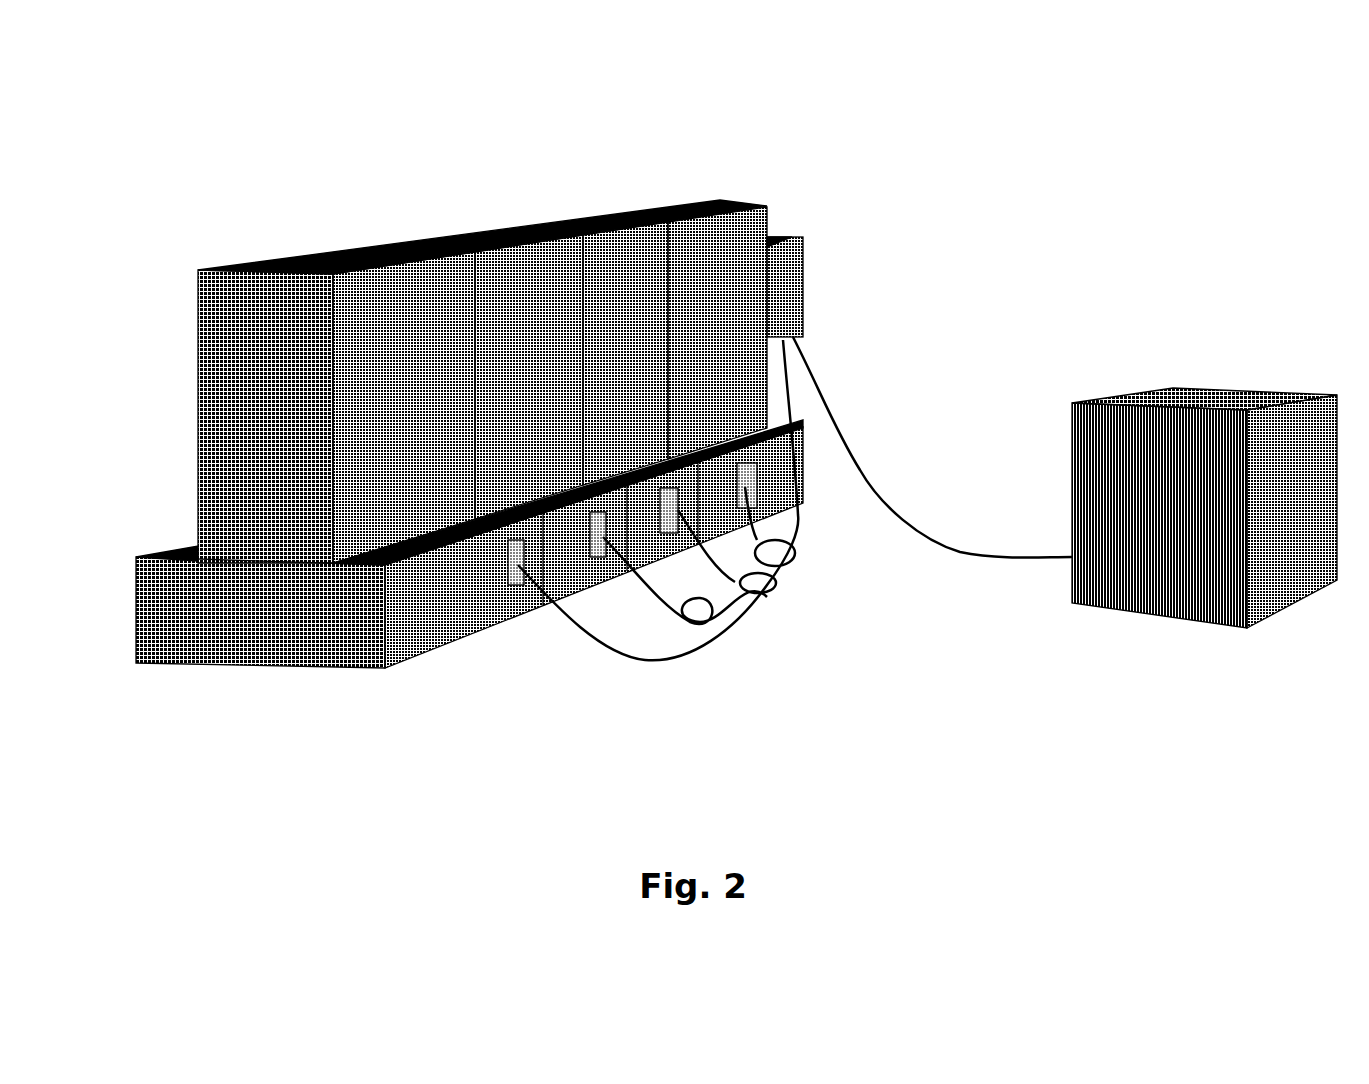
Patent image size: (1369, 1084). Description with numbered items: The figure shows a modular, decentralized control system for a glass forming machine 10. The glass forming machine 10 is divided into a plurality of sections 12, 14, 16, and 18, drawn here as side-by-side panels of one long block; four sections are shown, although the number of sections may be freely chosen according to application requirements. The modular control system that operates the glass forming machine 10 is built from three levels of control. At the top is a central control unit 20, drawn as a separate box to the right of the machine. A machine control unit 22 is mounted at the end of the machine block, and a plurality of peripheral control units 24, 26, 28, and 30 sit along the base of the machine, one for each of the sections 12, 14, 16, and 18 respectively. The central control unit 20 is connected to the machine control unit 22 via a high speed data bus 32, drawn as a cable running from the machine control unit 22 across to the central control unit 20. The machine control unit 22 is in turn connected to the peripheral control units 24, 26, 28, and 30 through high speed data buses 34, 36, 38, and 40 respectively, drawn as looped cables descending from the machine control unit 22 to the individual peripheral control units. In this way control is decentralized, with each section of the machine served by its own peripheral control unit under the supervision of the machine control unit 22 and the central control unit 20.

The glass forming machine 10 is at (474, 435).
The section 12 is at (377, 295).
The section 14 is at (503, 278).
The section 16 is at (610, 258).
The section 18 is at (713, 243).
The central control unit 20 is at (1220, 413).
The machine control unit 22 is at (795, 290).
The peripheral control unit 24 is at (522, 630).
The peripheral control unit 26 is at (599, 565).
The peripheral control unit 28 is at (673, 540).
The peripheral control unit 30 is at (780, 510).
The high speed data bus 32 is at (860, 465).
The high speed data bus 34 is at (793, 555).
The high speed data bus 36 is at (767, 597).
The high speed data bus 38 is at (713, 617).
The high speed data bus 40 is at (643, 662).